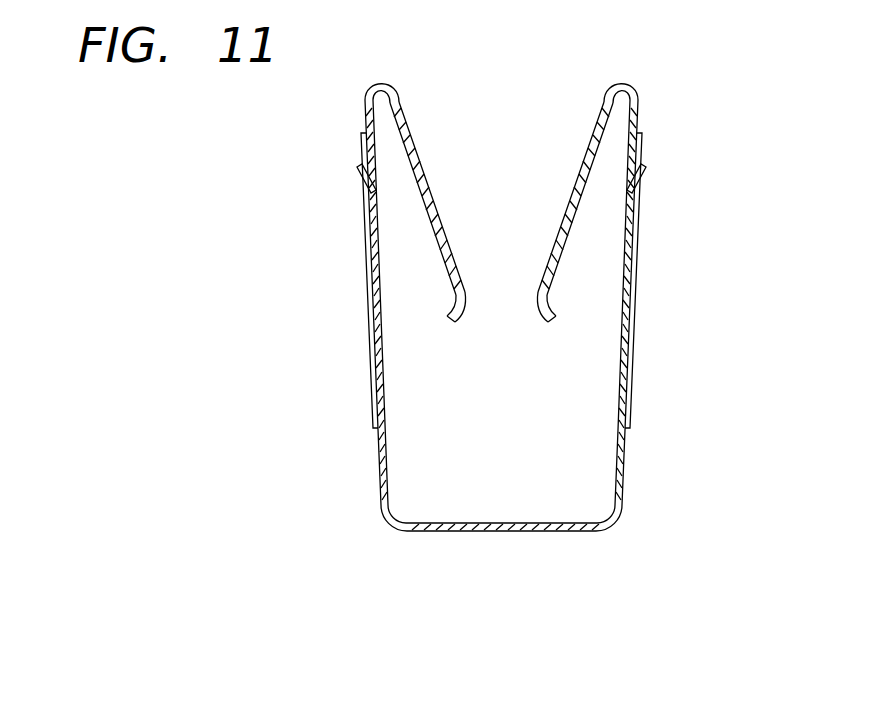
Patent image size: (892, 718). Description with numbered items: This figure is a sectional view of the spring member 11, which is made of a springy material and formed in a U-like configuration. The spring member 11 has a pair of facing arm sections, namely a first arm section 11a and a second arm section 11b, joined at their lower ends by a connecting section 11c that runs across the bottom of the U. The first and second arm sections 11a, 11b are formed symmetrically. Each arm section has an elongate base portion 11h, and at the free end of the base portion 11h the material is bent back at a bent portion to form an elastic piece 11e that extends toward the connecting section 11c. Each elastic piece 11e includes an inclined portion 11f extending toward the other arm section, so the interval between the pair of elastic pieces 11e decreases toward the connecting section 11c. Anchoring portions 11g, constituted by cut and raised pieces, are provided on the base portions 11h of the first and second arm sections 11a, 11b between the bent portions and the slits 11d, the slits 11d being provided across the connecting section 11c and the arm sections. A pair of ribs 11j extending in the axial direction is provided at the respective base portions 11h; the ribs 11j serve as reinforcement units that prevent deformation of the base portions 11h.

The spring member 11 is at (376, 473).
The first arm section 11a is at (366, 117).
The second arm section 11b is at (640, 116).
The connecting section 11c is at (465, 534).
The slit 11d is at (627, 451).
The elastic piece 11e is at (400, 105).
The inclined portion 11f is at (442, 218).
The anchoring portion 11g is at (357, 168).
The base portion 11h is at (384, 314).
The rib 11j is at (368, 376).